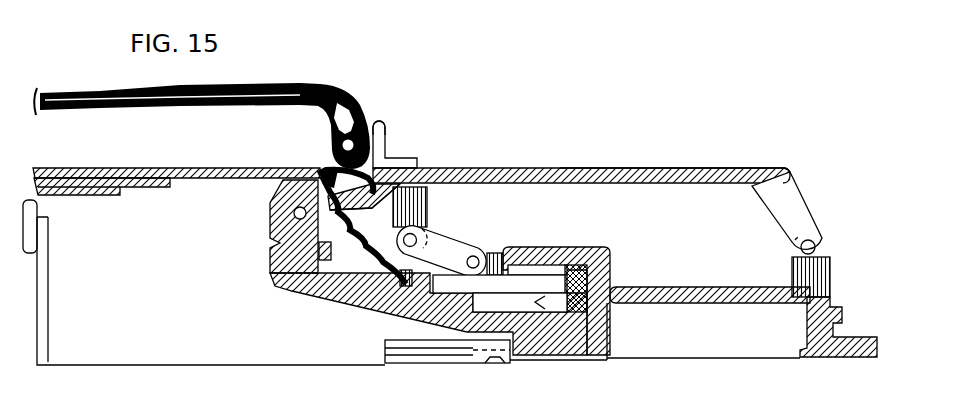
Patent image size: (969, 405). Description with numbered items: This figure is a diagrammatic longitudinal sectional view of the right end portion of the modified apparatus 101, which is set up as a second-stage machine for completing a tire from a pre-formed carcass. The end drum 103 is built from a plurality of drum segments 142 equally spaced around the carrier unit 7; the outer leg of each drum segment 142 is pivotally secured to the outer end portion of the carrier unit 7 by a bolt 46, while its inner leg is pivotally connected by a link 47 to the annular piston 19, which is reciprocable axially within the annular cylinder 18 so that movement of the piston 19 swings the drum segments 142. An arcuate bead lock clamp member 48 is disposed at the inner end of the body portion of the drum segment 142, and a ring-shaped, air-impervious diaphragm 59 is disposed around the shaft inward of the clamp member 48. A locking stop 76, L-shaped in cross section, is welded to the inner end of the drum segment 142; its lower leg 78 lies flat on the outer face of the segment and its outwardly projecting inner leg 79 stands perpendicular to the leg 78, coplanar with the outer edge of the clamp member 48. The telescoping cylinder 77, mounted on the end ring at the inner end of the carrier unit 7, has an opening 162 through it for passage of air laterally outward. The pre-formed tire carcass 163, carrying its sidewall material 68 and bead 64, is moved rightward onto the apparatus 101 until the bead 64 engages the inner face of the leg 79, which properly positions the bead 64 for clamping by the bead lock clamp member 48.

The tire carcass 163 is at (107, 92).
The sidewall material 68 is at (250, 86).
The bead 64 is at (360, 113).
The inner leg 79 is at (385, 122).
The locking stop 76 is at (382, 152).
The lower leg 78 is at (422, 167).
The end drum 103 is at (606, 166).
The drum segment 142 is at (689, 168).
The apparatus 101 is at (812, 184).
The bolt 46 is at (800, 223).
The carrier unit 7 is at (820, 274).
The annular cylinder 18 is at (609, 272).
The annular piston 19 is at (523, 278).
The link 47 is at (450, 243).
The bead lock clamp member 48 is at (354, 203).
The diaphragm 59 is at (363, 257).
The opening 162 is at (152, 187).
The telescoping cylinder 77 is at (214, 184).